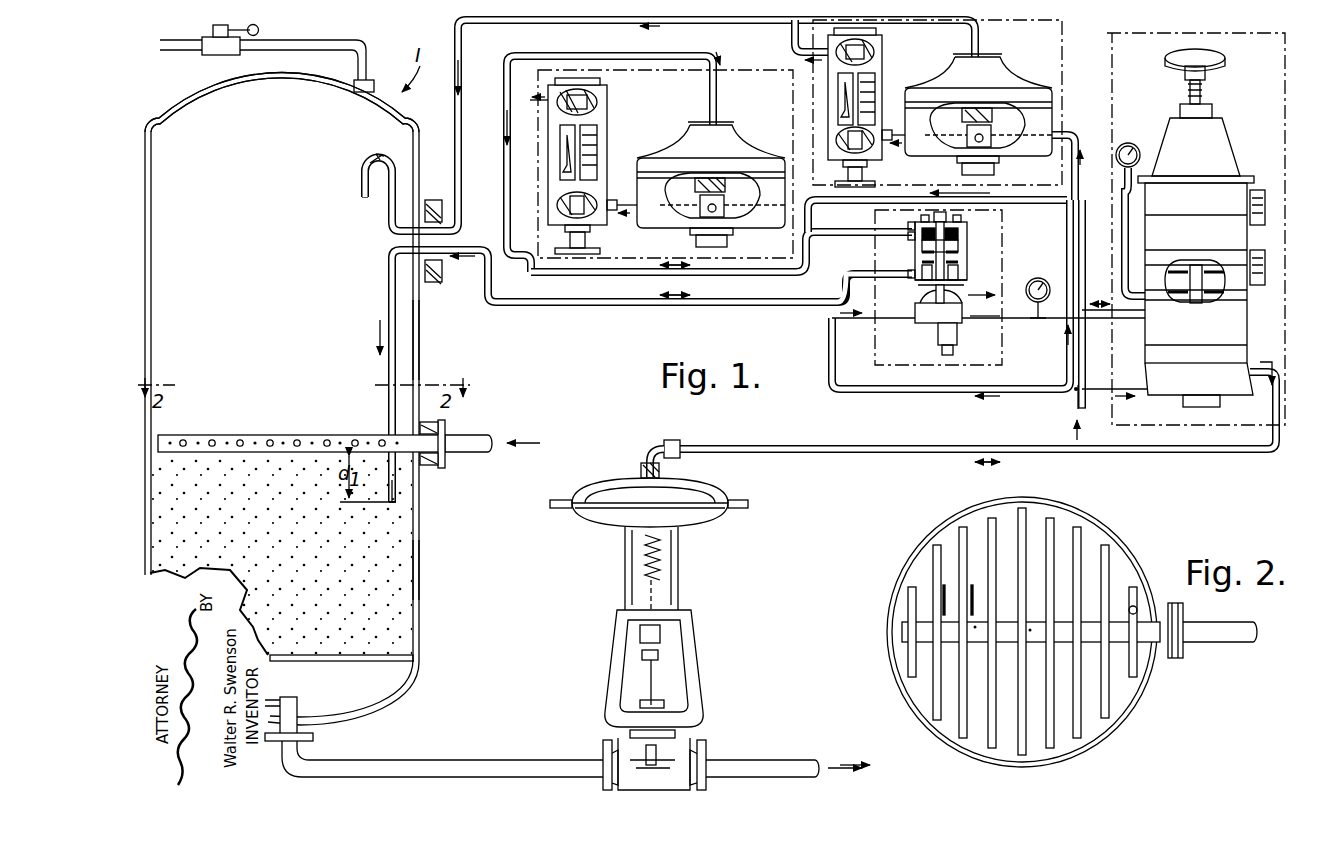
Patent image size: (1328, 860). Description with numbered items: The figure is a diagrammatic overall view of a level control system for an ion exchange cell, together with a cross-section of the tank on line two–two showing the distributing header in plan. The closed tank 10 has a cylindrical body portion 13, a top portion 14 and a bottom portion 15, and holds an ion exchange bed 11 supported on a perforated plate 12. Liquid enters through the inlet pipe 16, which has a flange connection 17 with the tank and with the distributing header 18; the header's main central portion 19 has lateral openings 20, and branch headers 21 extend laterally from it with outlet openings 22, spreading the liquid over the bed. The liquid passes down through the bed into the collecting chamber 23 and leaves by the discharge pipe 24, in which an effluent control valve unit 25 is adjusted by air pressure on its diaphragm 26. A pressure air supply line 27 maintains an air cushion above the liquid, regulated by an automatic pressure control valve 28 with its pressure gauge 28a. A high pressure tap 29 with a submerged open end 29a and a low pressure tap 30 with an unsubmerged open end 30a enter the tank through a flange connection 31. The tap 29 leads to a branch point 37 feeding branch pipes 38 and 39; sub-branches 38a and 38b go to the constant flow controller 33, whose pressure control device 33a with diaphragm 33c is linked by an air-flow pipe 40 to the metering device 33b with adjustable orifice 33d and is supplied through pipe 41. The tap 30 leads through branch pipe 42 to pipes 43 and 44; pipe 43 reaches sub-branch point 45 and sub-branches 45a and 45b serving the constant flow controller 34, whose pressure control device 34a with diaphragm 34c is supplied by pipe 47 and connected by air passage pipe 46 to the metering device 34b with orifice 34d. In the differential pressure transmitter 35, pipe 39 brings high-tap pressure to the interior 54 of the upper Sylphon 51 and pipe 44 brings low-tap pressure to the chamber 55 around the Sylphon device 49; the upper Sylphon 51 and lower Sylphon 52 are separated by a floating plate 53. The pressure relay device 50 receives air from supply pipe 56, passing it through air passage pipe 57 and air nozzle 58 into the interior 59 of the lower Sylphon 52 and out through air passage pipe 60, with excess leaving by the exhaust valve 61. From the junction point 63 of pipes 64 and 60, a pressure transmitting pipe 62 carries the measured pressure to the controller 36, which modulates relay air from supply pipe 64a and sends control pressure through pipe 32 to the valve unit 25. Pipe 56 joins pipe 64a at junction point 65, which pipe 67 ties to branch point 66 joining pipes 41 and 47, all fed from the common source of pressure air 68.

In FIG. 1, the closed tank 10 is at (419, 155).
In FIG. 1, the ion exchange bed 11 is at (412, 572).
In FIG. 1, the perforated plate 12 is at (347, 655).
In FIG. 1, the cylindrical body portion 13 is at (421, 342).
In FIG. 1, the top portion 14 is at (290, 80).
In FIG. 1, the bottom portion 15 is at (365, 698).
In FIG. 1, the inlet pipe 16 is at (488, 456).
In FIG. 1, the flange connection 17 is at (440, 466).
In FIG. 1, the distributing header 18 is at (272, 435).
In FIG. 2, the distributing header 18 is at (925, 595).
In FIG. 2, the main header central portion 19 is at (920, 635).
In FIG. 1, the lateral openings 20 is at (256, 440).
In FIG. 2, the lateral openings 20 is at (1031, 628).
In FIG. 2, the branch headers 21 is at (1000, 708).
In FIG. 2, the outlet openings 22 is at (980, 592).
In FIG. 1, the collecting chamber 23 is at (365, 670).
In FIG. 1, the discharge pipe 24 is at (490, 758).
In FIG. 1, the effluent control valve unit 25 is at (685, 597).
In FIG. 1, the diaphragm 26 is at (718, 522).
In FIG. 1, the pressure air supply line 27 is at (368, 55).
In FIG. 1, the automatic pressure control valve 28 is at (222, 55).
In FIG. 1, the pressure gauge 28a is at (259, 30).
In FIG. 1, the high pressure tap 29 is at (388, 272).
In FIG. 1, the open end 29a is at (391, 505).
In FIG. 1, the low pressure tap 30 is at (363, 183).
In FIG. 1, the open end 30a is at (365, 200).
In FIG. 1, the flange connection 31 is at (440, 266).
In FIG. 1, the air pressure transmitting pipe 32 is at (945, 447).
In FIG. 1, the constant flow controller 33 is at (540, 182).
In FIG. 1, the pressure control device 33a is at (760, 157).
In FIG. 1, the metering device 33b is at (615, 105).
In FIG. 1, the pressure responsive diaphragm 33c is at (698, 168).
In FIG. 1, the adjustable orifice 33d is at (598, 212).
In FIG. 1, the constant flow controller 34 is at (1064, 92).
In FIG. 1, the pressure control device 34a is at (1028, 90).
In FIG. 1, the metering device 34b is at (882, 70).
In FIG. 1, the pressure responsive diaphragm 34c is at (985, 100).
In FIG. 1, the adjustable orifice 34d is at (875, 146).
In FIG. 1, the differential pressure transmitter 35 is at (1004, 248).
In FIG. 1, the controller 36 is at (1282, 185).
In FIG. 1, the branch point 37 is at (524, 255).
In FIG. 1, the branch pipe 38 is at (505, 180).
In FIG. 1, the sub-branch pipe 38a is at (527, 55).
In FIG. 1, the sub-branch pipe 38b is at (545, 110).
In FIG. 1, the branch pipe 39 is at (745, 274).
In FIG. 1, the air-flow pipe 40 is at (608, 198).
In FIG. 1, the air supply pipe 41 is at (1044, 203).
In FIG. 1, the branch pipe 42 is at (455, 232).
In FIG. 1, the branch pipe 43 is at (462, 140).
In FIG. 1, the branch pipe 44 is at (600, 306).
In FIG. 1, the sub-branch point 45 is at (800, 22).
In FIG. 1, the sub-branch pipe 45a is at (870, 28).
In FIG. 1, the sub-branch pipe 45b is at (800, 58).
In FIG. 1, the air passage pipe 46 is at (890, 128).
In FIG. 1, the air supply pipe 47 is at (1080, 160).
In FIG. 1, the Sylphon device 49 is at (908, 238).
In FIG. 1, the pressure relay device 50 is at (965, 226).
In FIG. 1, the upper Sylphon 51 is at (958, 246).
In FIG. 1, the lower Sylphon 52 is at (958, 268).
In FIG. 1, the floating plate 53 is at (960, 258).
In FIG. 1, the interior of upper Sylphon 54 is at (913, 216).
In FIG. 1, the chamber 55 is at (920, 252).
In FIG. 1, the air supply pipe 56 is at (858, 320).
In FIG. 1, the air passage pipe 57 is at (934, 296).
In FIG. 1, the air nozzle 58 is at (922, 284).
In FIG. 1, the interior of lower Sylphon 59 is at (908, 272).
In FIG. 1, the air passage pipe 60 is at (1035, 286).
In FIG. 1, the exhaust valve 61 is at (940, 333).
In FIG. 1, the pressure transmitting pipe 62 is at (1105, 316).
In FIG. 1, the junction point 63 is at (1005, 320).
In FIG. 1, the pipe 64 is at (992, 320).
In FIG. 1, the supply pipe 64a is at (1118, 385).
In FIG. 1, the junction point 65 is at (1074, 386).
In FIG. 1, the branch point 66 is at (1088, 200).
In FIG. 1, the pipe 67 is at (1082, 280).
In FIG. 1, the common source of pressure air 68 is at (1077, 406).